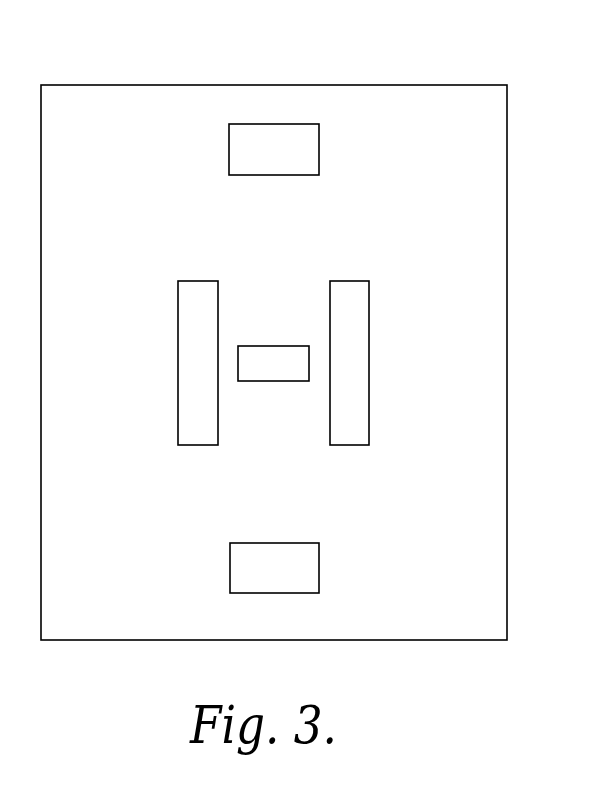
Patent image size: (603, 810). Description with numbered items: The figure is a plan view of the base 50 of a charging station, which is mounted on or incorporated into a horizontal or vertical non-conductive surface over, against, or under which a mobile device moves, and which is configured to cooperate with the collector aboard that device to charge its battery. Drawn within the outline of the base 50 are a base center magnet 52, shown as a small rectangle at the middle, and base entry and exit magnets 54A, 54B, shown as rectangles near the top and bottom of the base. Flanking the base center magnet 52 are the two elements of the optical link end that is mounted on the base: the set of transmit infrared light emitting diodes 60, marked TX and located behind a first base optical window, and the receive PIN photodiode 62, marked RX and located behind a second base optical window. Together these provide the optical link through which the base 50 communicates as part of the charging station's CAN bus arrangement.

The base 50 is at (474, 62).
The base center magnet 52 is at (275, 355).
The base entry magnet 54A is at (348, 160).
The base exit magnet 54B is at (338, 565).
The transmit IR light emitting diodes 60 is at (156, 351).
The receive PIN photodiode 62 is at (392, 356).